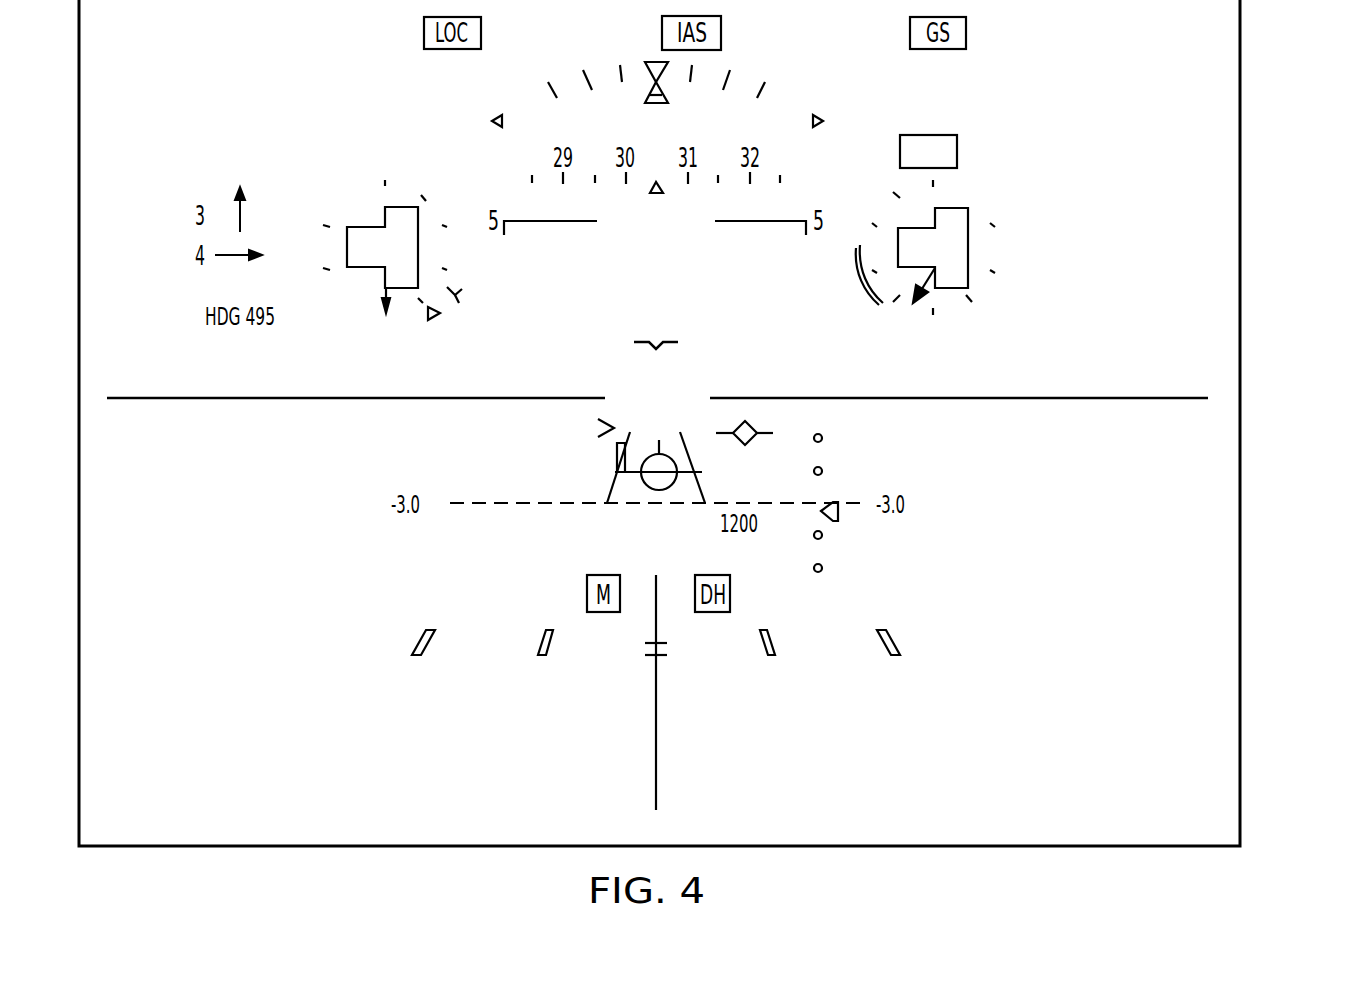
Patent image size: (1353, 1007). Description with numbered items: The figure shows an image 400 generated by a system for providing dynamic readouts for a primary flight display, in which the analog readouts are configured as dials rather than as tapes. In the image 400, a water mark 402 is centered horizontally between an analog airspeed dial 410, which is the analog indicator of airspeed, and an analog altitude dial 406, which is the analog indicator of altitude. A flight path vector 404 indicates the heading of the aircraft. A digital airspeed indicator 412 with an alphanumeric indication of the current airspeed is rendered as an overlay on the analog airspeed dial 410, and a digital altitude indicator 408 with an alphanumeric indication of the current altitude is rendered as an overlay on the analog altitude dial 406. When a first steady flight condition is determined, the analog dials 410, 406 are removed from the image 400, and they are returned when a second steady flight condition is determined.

The image 400 is at (1240, 90).
The water mark 402 is at (664, 340).
The flight path vector 404 is at (659, 490).
The analog altitude dial 406 is at (979, 250).
The digital altitude indicator 408 is at (968, 255).
The analog airspeed dial 410 is at (377, 235).
The digital airspeed indicator 412 is at (370, 267).